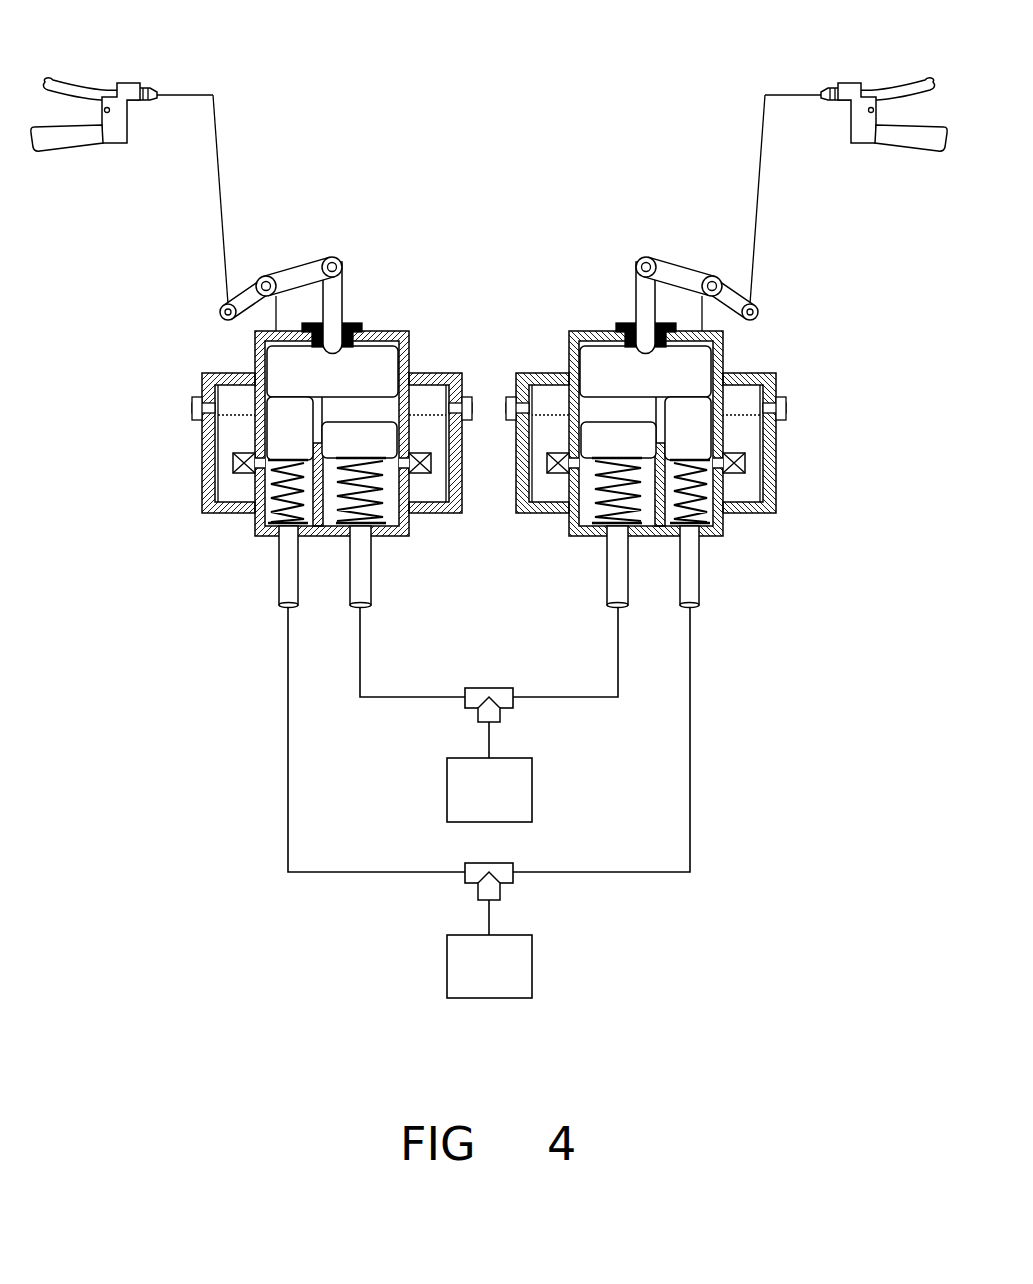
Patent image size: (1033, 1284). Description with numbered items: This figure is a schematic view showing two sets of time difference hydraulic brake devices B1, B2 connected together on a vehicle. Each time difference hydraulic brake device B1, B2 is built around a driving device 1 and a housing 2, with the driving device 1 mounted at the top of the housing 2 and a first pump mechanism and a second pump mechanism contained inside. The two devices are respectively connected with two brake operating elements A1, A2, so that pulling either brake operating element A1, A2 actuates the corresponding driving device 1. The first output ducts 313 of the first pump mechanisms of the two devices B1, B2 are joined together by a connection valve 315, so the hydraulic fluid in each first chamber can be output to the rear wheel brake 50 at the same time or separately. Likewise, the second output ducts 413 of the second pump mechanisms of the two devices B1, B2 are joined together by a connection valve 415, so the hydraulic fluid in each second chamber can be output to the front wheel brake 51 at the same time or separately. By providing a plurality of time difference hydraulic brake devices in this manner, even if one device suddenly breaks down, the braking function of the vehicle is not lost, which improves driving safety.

The driving device 1 is at (489, 213).
The housing 2 is at (489, 386).
The first output duct 313 is at (283, 572).
The second output duct 413 is at (365, 570).
The connection valve 315 is at (502, 877).
The connection valve 415 is at (502, 700).
The rear wheel brake 50 is at (525, 978).
The front wheel brake 51 is at (453, 790).
The brake operating element A1 is at (888, 90).
The brake operating element A2 is at (90, 90).
The time difference hydraulic brake device B1 is at (829, 359).
The time difference hydraulic brake device B2 is at (176, 359).